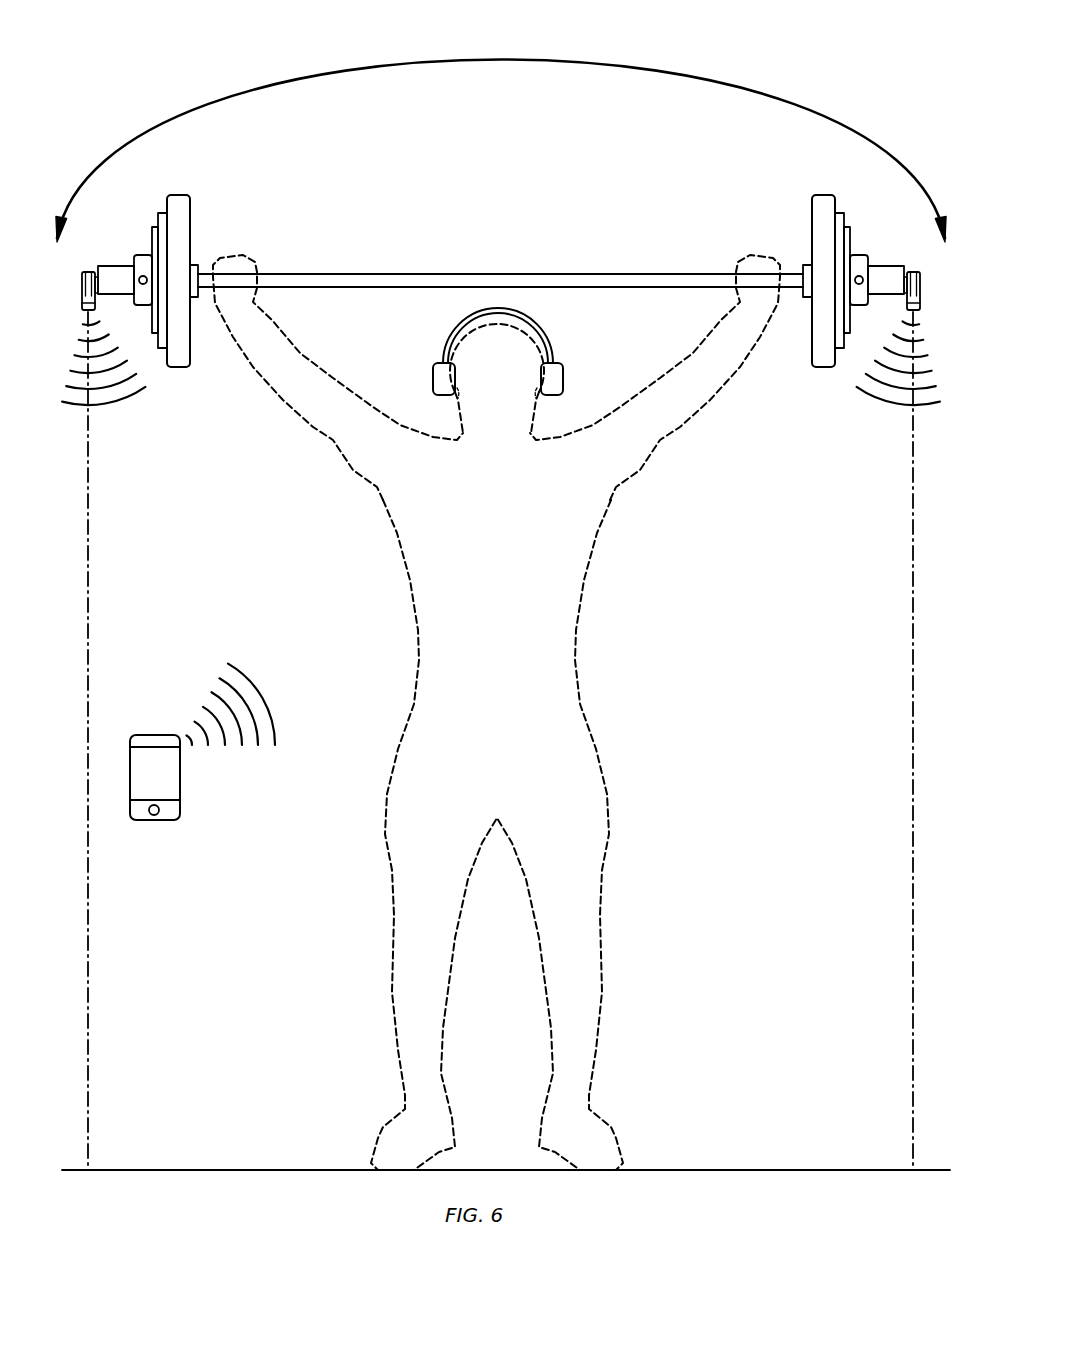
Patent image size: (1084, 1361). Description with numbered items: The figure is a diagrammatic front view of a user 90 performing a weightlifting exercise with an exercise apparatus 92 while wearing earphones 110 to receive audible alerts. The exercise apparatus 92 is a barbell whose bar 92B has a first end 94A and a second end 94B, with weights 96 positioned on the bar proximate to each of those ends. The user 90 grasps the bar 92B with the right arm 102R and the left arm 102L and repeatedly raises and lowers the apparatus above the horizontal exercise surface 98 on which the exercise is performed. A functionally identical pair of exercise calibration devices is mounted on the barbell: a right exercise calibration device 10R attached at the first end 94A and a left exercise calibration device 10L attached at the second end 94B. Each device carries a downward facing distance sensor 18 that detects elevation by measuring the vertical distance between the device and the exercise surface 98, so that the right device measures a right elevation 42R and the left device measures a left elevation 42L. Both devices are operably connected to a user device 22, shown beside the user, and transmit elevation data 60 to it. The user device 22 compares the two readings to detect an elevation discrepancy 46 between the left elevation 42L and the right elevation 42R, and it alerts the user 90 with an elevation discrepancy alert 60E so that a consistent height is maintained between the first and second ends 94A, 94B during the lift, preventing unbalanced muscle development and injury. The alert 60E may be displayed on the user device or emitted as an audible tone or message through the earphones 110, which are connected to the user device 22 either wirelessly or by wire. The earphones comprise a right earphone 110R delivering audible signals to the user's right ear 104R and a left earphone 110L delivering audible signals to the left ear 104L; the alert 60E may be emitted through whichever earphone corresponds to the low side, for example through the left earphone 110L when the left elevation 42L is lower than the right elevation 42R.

The elevation discrepancy 46 is at (758, 88).
The horizontal exercise surface 98 is at (760, 1170).
The right elevation 42R is at (88, 592).
The left elevation 42L is at (913, 708).
The exercise apparatus 92 is at (498, 256).
The bar 92B is at (670, 272).
The weights 96 is at (183, 194).
The first end 94A is at (122, 265).
The second end 94B is at (880, 265).
The right exercise calibration device 10R is at (80, 292).
The left exercise calibration device 10L is at (921, 286).
The distance sensor 18 is at (88, 310).
The elevation data 60 is at (140, 392).
The elevation discrepancy alert 60E is at (225, 740).
The user device 22 is at (168, 822).
The user 90 is at (495, 712).
The right arm 102R is at (292, 408).
The left arm 102L is at (700, 408).
The right ear 104R is at (457, 393).
The left ear 104L is at (540, 393).
The earphones 110 is at (494, 346).
The right earphone 110R is at (432, 376).
The left earphone 110L is at (563, 380).